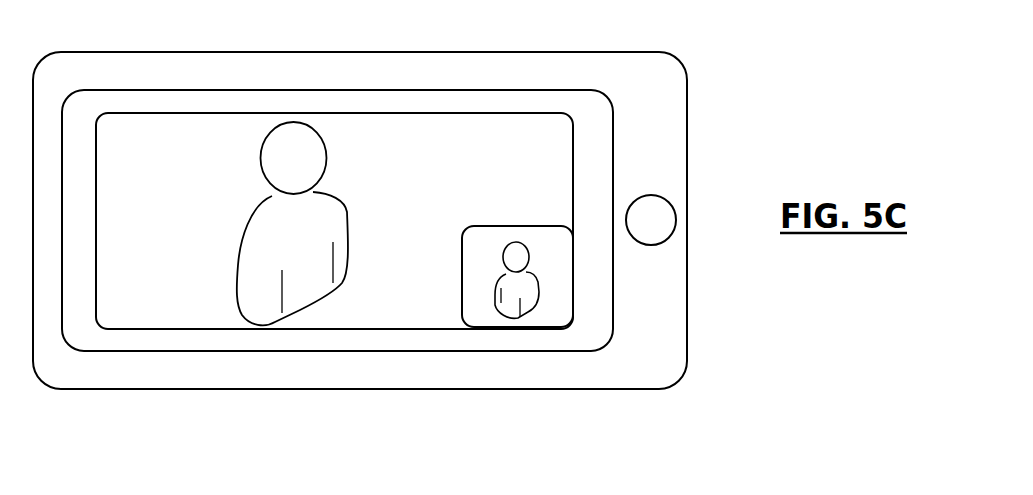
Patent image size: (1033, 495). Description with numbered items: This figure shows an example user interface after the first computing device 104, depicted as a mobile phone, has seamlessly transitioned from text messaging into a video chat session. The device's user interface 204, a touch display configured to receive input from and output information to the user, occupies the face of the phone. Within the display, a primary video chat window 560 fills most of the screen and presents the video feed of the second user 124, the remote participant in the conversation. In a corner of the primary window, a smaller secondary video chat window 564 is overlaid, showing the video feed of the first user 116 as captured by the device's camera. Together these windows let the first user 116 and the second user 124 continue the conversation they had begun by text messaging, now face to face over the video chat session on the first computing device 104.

The first computing device 104 is at (677, 62).
The user interface 204 is at (153, 90).
The primary video chat window 560 is at (415, 113).
The second user 124 is at (237, 296).
The secondary video chat window 564 is at (458, 303).
The first user 116 is at (540, 302).